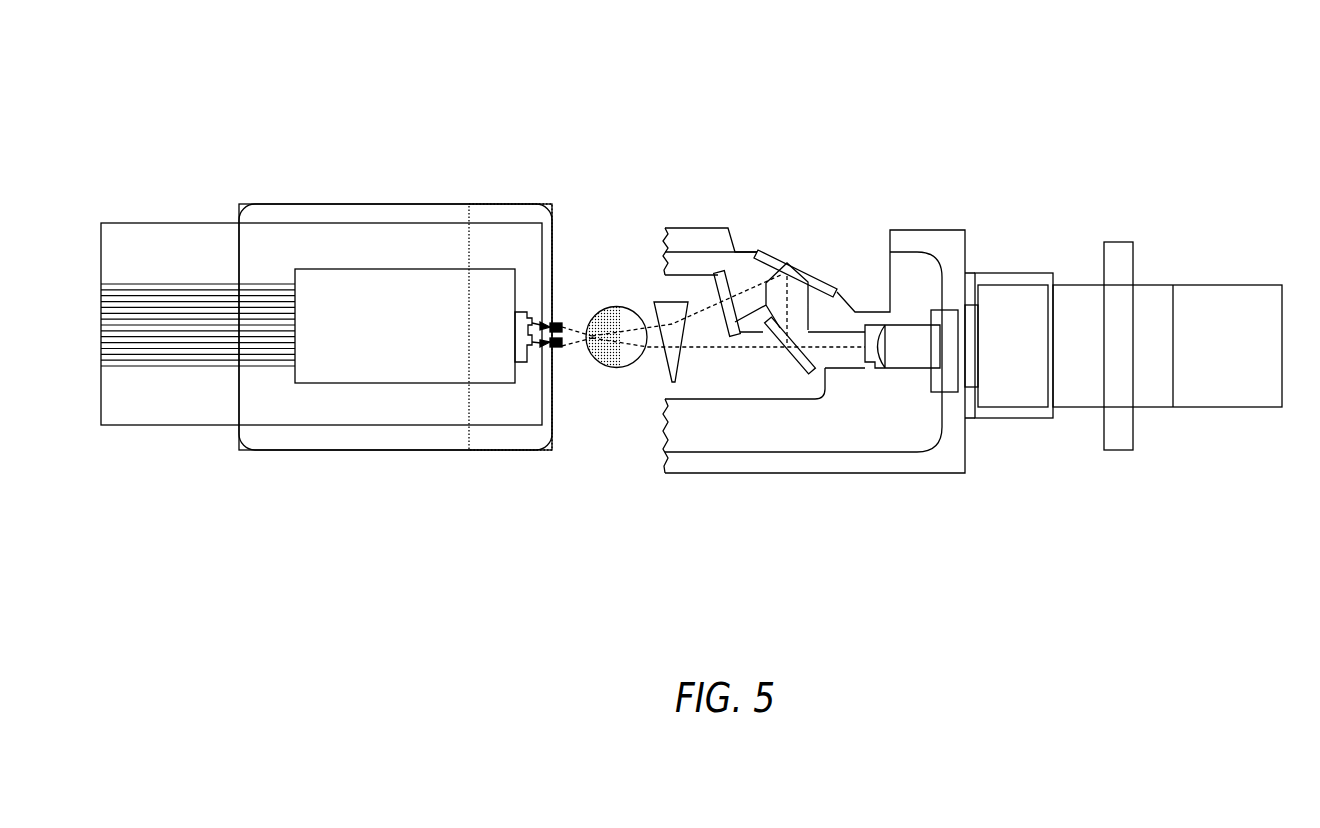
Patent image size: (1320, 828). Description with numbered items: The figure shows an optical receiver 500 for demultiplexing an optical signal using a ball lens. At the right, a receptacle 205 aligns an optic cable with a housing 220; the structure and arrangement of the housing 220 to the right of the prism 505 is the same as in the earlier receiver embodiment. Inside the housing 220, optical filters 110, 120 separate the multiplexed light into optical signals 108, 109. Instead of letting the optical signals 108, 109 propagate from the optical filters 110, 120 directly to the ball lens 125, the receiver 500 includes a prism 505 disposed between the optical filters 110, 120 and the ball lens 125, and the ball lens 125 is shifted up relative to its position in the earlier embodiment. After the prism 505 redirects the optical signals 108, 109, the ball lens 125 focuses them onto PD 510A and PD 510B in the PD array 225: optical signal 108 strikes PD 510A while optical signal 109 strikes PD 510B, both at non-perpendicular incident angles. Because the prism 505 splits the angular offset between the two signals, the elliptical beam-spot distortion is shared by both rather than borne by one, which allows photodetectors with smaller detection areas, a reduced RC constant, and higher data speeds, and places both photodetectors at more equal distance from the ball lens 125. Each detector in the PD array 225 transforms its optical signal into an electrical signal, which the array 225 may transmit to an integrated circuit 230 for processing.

The optical receiver 500 is at (924, 52).
The integrated circuit 230 is at (432, 366).
The PD array 225 is at (535, 374).
The PD 510A is at (521, 312).
The PD 510B is at (521, 362).
The ball lens 125 is at (628, 367).
The prism 505 is at (677, 302).
The optical signal 108 is at (754, 348).
The optical filter 120 is at (718, 271).
The optical signal 109 is at (755, 283).
The optical filter 110 is at (814, 372).
The housing 220 is at (933, 465).
The receptacle 205 is at (1217, 285).